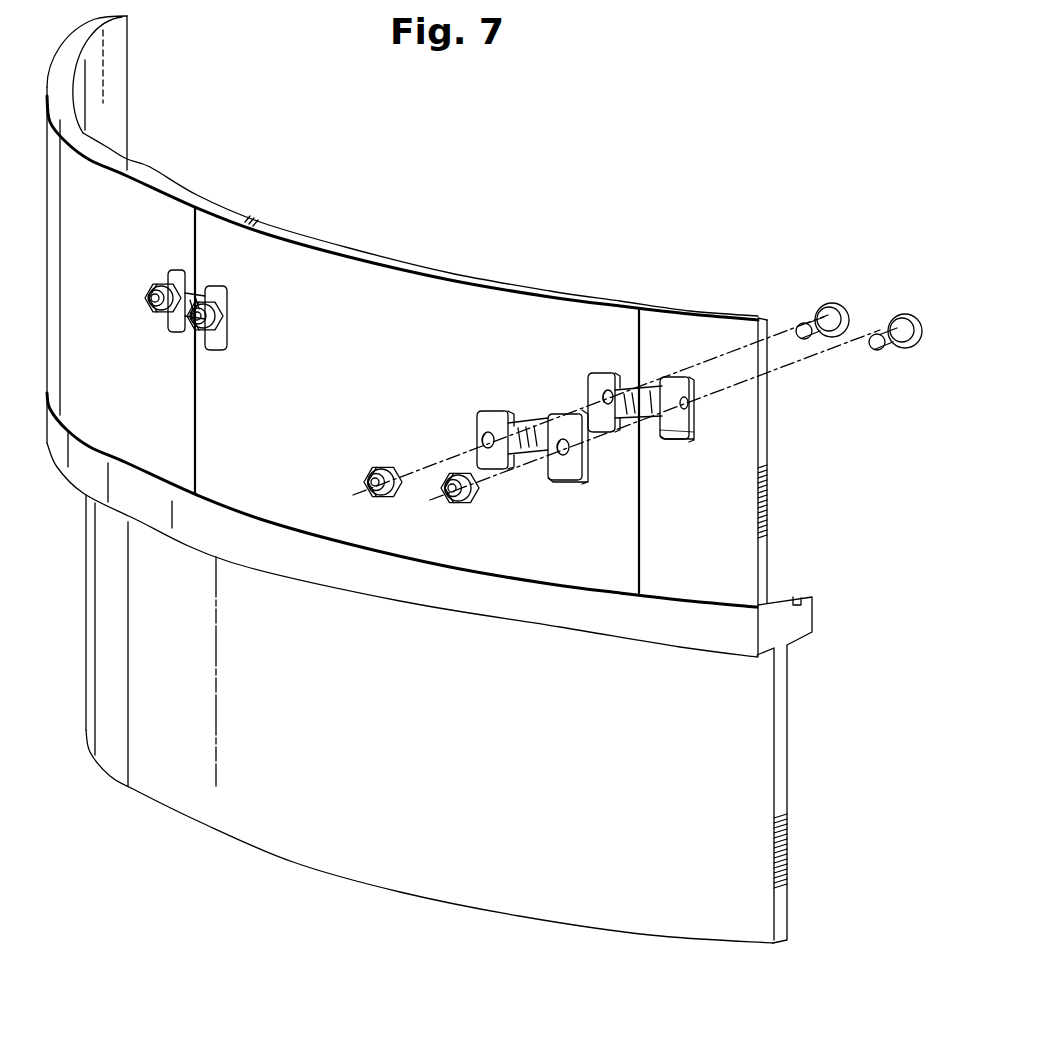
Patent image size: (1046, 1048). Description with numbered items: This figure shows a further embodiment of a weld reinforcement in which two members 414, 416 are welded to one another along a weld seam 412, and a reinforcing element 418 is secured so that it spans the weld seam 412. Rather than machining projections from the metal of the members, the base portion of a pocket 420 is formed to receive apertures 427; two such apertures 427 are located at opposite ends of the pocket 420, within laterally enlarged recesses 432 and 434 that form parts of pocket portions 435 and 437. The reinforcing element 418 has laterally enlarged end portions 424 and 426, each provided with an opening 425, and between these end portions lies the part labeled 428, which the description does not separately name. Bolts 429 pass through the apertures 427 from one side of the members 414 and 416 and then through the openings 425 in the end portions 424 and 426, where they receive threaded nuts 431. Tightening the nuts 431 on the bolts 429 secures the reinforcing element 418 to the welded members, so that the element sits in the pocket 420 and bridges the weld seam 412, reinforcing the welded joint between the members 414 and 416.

The weld seam 412 is at (640, 533).
The member 414 is at (520, 320).
The member 416 is at (670, 330).
The reinforcing element 418 is at (488, 462).
The pocket 420 is at (625, 363).
The laterally enlarged end portion 424 is at (448, 430).
The opening 425 is at (481, 441).
The laterally enlarged end portion 426 is at (565, 474).
The aperture 427 is at (601, 399).
The web of bracket 418 428 is at (517, 452).
The bolt 429 is at (822, 308).
The threaded nut 431 is at (462, 505).
The laterally enlarged recess 432 is at (569, 334).
The laterally enlarged recess 434 is at (681, 430).
The pocket portion 435 is at (627, 398).
The pocket portion 437 is at (650, 401).